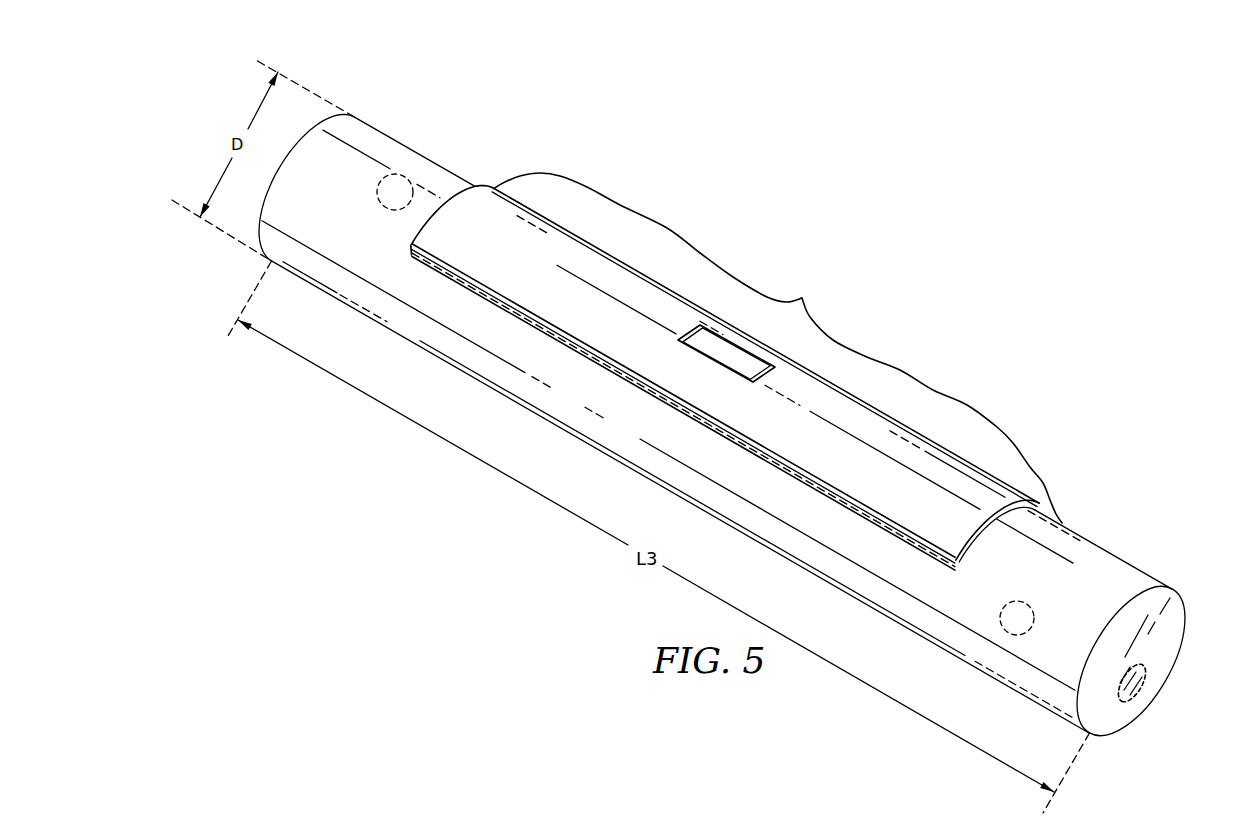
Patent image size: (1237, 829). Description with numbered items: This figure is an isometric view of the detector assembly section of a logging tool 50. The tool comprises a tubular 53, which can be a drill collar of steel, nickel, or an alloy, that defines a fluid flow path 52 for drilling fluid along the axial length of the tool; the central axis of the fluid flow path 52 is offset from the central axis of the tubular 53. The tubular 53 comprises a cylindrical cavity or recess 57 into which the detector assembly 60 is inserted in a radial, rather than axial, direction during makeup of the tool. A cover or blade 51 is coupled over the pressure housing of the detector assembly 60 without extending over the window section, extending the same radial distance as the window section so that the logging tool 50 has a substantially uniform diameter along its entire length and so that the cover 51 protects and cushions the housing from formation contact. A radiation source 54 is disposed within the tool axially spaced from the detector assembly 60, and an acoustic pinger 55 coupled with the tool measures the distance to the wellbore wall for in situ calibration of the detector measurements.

The logging tool 50 is at (942, 250).
The cover or blade 51 is at (913, 509).
The fluid flow path 52 is at (1133, 688).
The tubular 53 is at (1125, 578).
The radiation source 54 is at (412, 180).
The acoustic pinger 55 is at (1034, 611).
The cavity or recess 57 is at (937, 553).
The detector assembly 60 is at (802, 298).